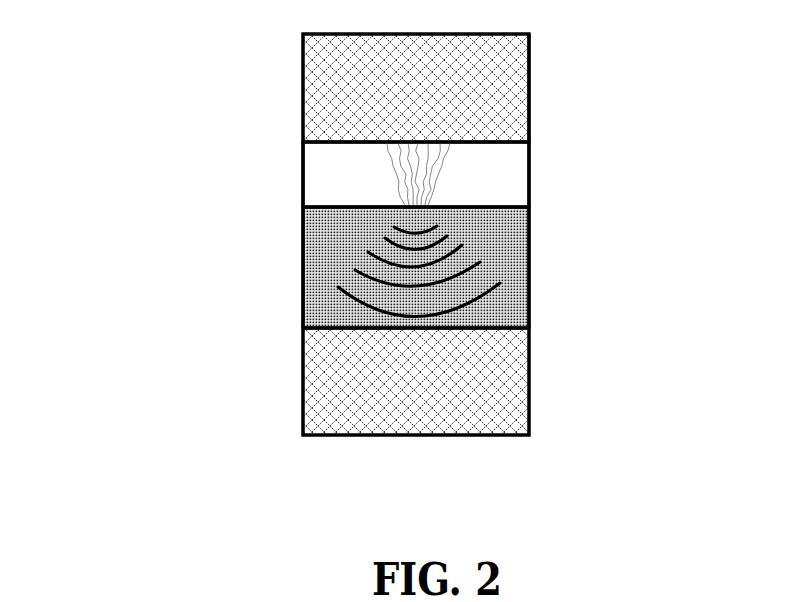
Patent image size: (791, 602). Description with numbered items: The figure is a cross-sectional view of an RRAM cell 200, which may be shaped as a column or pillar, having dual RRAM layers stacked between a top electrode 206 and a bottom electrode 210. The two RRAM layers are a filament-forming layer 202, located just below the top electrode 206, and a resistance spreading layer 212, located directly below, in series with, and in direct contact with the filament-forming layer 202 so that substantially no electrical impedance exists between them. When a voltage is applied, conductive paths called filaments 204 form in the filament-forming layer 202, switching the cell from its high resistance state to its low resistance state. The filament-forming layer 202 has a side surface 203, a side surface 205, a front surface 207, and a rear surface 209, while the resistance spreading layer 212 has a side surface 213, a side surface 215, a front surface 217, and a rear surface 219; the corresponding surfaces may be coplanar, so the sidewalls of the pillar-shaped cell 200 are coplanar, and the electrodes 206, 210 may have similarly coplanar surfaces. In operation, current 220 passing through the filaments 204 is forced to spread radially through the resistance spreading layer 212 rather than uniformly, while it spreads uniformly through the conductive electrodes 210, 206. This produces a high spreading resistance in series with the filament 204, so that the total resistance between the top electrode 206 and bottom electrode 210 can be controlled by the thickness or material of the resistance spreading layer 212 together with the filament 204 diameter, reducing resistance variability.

The RRAM cell 200 is at (78, 87).
The filament-forming layer 202 is at (518, 155).
The side surface 203 is at (302, 170).
The filaments 204 is at (387, 162).
The side surface 205 is at (532, 167).
The top electrode 206 is at (518, 52).
The front surface 207 is at (347, 173).
The rear surface 209 is at (541, 122).
The bottom electrode 210 is at (332, 383).
The resistance spreading layer 212 is at (318, 269).
The side surface 213 is at (302, 312).
The side surface 215 is at (531, 287).
The front surface 217 is at (507, 262).
The rear surface 219 is at (280, 243).
The current 220 is at (490, 293).